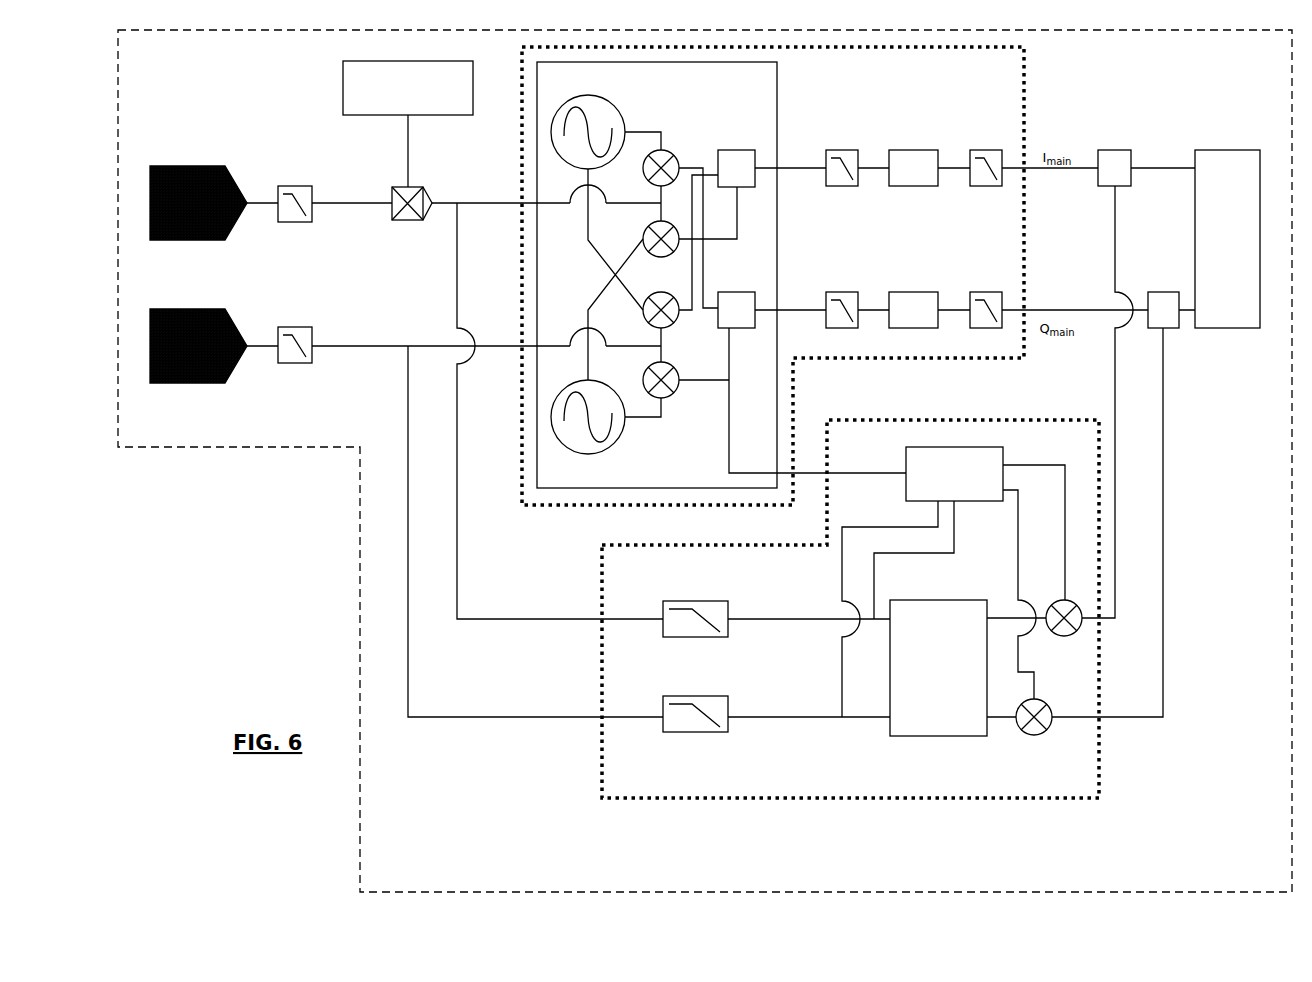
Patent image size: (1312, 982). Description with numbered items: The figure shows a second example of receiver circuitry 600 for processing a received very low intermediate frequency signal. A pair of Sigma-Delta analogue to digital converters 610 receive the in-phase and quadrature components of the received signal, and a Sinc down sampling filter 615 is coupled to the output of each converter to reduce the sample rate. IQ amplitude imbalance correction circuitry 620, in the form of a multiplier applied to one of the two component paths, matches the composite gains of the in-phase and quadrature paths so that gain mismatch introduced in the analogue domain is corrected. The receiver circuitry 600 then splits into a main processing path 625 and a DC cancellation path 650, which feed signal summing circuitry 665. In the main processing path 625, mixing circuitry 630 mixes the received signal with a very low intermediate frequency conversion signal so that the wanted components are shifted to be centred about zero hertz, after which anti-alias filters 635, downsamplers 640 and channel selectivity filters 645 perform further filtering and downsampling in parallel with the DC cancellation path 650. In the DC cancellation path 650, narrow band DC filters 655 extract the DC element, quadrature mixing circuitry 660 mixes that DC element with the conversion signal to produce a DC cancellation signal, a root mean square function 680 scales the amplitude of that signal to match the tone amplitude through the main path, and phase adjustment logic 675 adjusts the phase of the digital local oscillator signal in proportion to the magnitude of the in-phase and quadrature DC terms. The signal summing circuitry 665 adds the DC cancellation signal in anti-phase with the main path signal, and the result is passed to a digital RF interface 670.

The receiver circuitry 600 is at (1183, 612).
The Sigma-Delta analogue to digital converters 610 is at (198, 310).
The Sinc (down sampling) filter 615 is at (314, 224).
The IQ amplitude imbalance correction circuitry 620 is at (426, 180).
The main processing path 625 is at (1026, 112).
The mixing circuitry 630 is at (780, 105).
The anti-alias filters 635 is at (841, 150).
The downsamplers 640 is at (908, 150).
The channel selectivity filters 645 is at (986, 150).
The DC cancellation path 650 is at (1101, 752).
The narrow band DC filter 655 is at (730, 628).
The quadrature mixing circuitry 660 is at (1053, 709).
The signal summing circuitry 665 is at (1132, 151).
The digital RF interface 670 is at (1229, 150).
The phase adjustment logic 675 is at (988, 447).
The Root Mean Square (RMS) function 680 is at (956, 600).